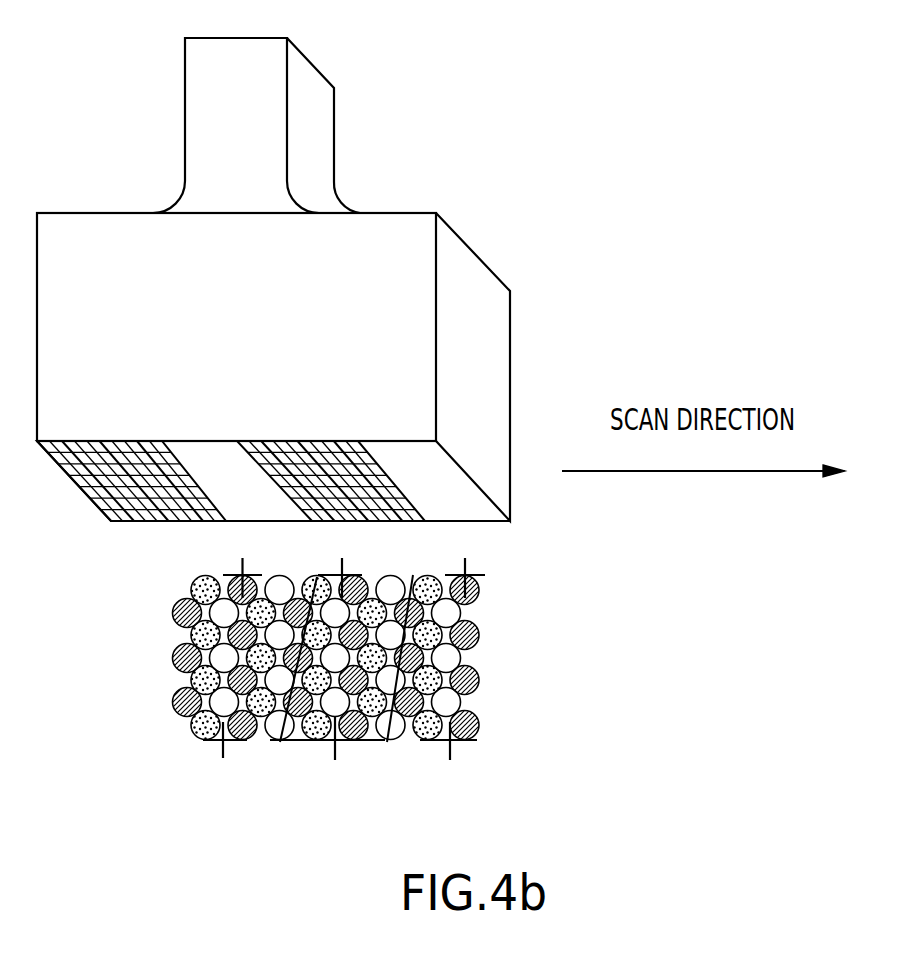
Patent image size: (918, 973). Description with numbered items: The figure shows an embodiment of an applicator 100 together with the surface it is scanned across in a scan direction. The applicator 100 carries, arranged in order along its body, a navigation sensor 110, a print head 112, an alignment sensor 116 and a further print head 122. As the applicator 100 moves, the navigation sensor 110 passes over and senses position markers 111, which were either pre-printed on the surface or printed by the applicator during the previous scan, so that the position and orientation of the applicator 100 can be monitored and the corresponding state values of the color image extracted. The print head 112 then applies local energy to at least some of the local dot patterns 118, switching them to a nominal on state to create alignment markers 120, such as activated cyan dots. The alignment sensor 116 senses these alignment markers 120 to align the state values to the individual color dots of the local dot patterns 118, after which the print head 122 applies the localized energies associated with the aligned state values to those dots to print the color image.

The applicator 100 is at (185, 127).
The print head 122 is at (131, 410).
The alignment sensor 116 is at (202, 329).
The print head 112 is at (331, 409).
The navigation sensor 110 is at (406, 327).
The local dot patterns 118 is at (295, 741).
The alignment markers 120 is at (378, 712).
The position markers 111 is at (453, 751).